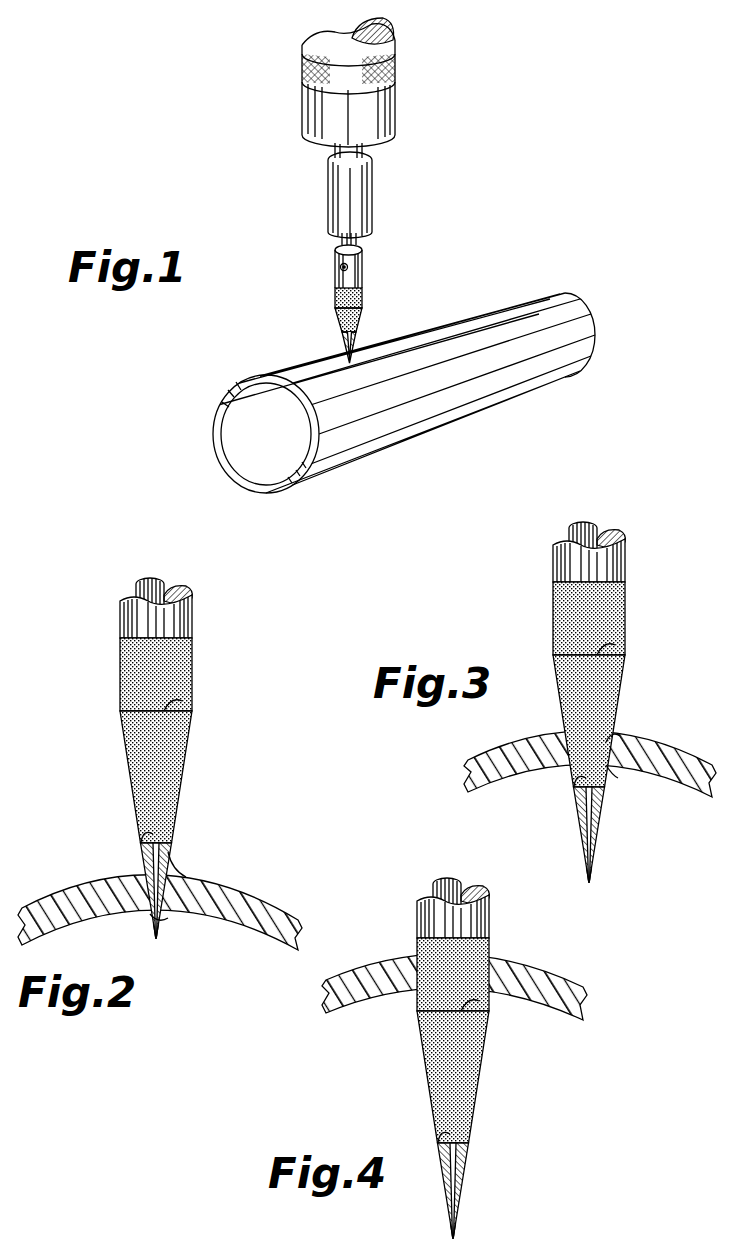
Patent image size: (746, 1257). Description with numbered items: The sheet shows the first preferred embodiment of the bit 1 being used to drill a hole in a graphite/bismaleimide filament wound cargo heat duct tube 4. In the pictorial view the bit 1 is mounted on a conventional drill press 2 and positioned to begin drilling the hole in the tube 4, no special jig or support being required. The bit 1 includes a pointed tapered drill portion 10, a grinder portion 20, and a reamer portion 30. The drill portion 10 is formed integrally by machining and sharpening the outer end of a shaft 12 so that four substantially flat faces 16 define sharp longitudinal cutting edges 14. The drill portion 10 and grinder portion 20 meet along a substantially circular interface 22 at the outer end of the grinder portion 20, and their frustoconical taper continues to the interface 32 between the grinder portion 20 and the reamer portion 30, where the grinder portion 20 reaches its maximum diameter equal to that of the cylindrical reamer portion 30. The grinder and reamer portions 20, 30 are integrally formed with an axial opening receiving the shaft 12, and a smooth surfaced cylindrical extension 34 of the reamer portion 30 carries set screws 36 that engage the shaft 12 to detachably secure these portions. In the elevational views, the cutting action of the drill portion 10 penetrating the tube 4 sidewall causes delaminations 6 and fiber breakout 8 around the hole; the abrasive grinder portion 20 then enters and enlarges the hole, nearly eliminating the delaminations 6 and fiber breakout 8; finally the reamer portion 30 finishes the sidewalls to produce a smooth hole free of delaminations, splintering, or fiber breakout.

In FIG. 1, the bit 1 is at (375, 293).
In FIG. 2, the bit 1 is at (212, 656).
In FIG. 3, the bit 1 is at (634, 604).
In FIG. 4, the bit 1 is at (498, 1096).
In FIG. 1, the drill press 2 is at (410, 120).
In FIG. 1, the tube 4 is at (505, 362).
In FIG. 2, the tube 4 is at (270, 905).
In FIG. 3, the tube 4 is at (690, 752).
In FIG. 4, the tube 4 is at (568, 982).
In FIG. 2, the delaminations 6 is at (180, 882).
In FIG. 3, the delaminations 6 is at (620, 742).
In FIG. 2, the fiber breakout 8 is at (170, 920).
In FIG. 3, the fiber breakout 8 is at (608, 770).
In FIG. 1, the drill portion 10 is at (346, 343).
In FIG. 2, the drill portion 10 is at (170, 848).
In FIG. 3, the drill portion 10 is at (592, 862).
In FIG. 4, the drill portion 10 is at (456, 1178).
In FIG. 1, the shaft 12 is at (340, 242).
In FIG. 2, the shaft 12 is at (172, 600).
In FIG. 3, the shaft 12 is at (608, 538).
In FIG. 4, the shaft 12 is at (443, 892).
In FIG. 2, the cutting edges 14 is at (146, 855).
In FIG. 3, the cutting edges 14 is at (585, 822).
In FIG. 4, the cutting edges 14 is at (462, 1160).
In FIG. 2, the flat faces 16 is at (150, 870).
In FIG. 3, the flat faces 16 is at (594, 832).
In FIG. 4, the flat faces 16 is at (456, 1192).
In FIG. 1, the grinder portion 20 is at (363, 320).
In FIG. 2, the grinder portion 20 is at (140, 770).
In FIG. 3, the grinder portion 20 is at (625, 672).
In FIG. 4, the grinder portion 20 is at (435, 1072).
In FIG. 2, the interface 22 is at (144, 832).
In FIG. 3, the interface 22 is at (575, 782).
In FIG. 4, the interface 22 is at (440, 1130).
In FIG. 1, the reamer portion 30 is at (336, 300).
In FIG. 2, the reamer portion 30 is at (120, 652).
In FIG. 3, the reamer portion 30 is at (565, 603).
In FIG. 4, the reamer portion 30 is at (478, 950).
In FIG. 2, the interface 32 is at (190, 706).
In FIG. 3, the interface 32 is at (580, 652).
In FIG. 4, the interface 32 is at (425, 1003).
In FIG. 1, the cylindrical extension 34 is at (365, 266).
In FIG. 2, the cylindrical extension 34 is at (134, 616).
In FIG. 3, the cylindrical extension 34 is at (614, 570).
In FIG. 4, the cylindrical extension 34 is at (430, 920).
In FIG. 1, the set screws 36 is at (340, 267).